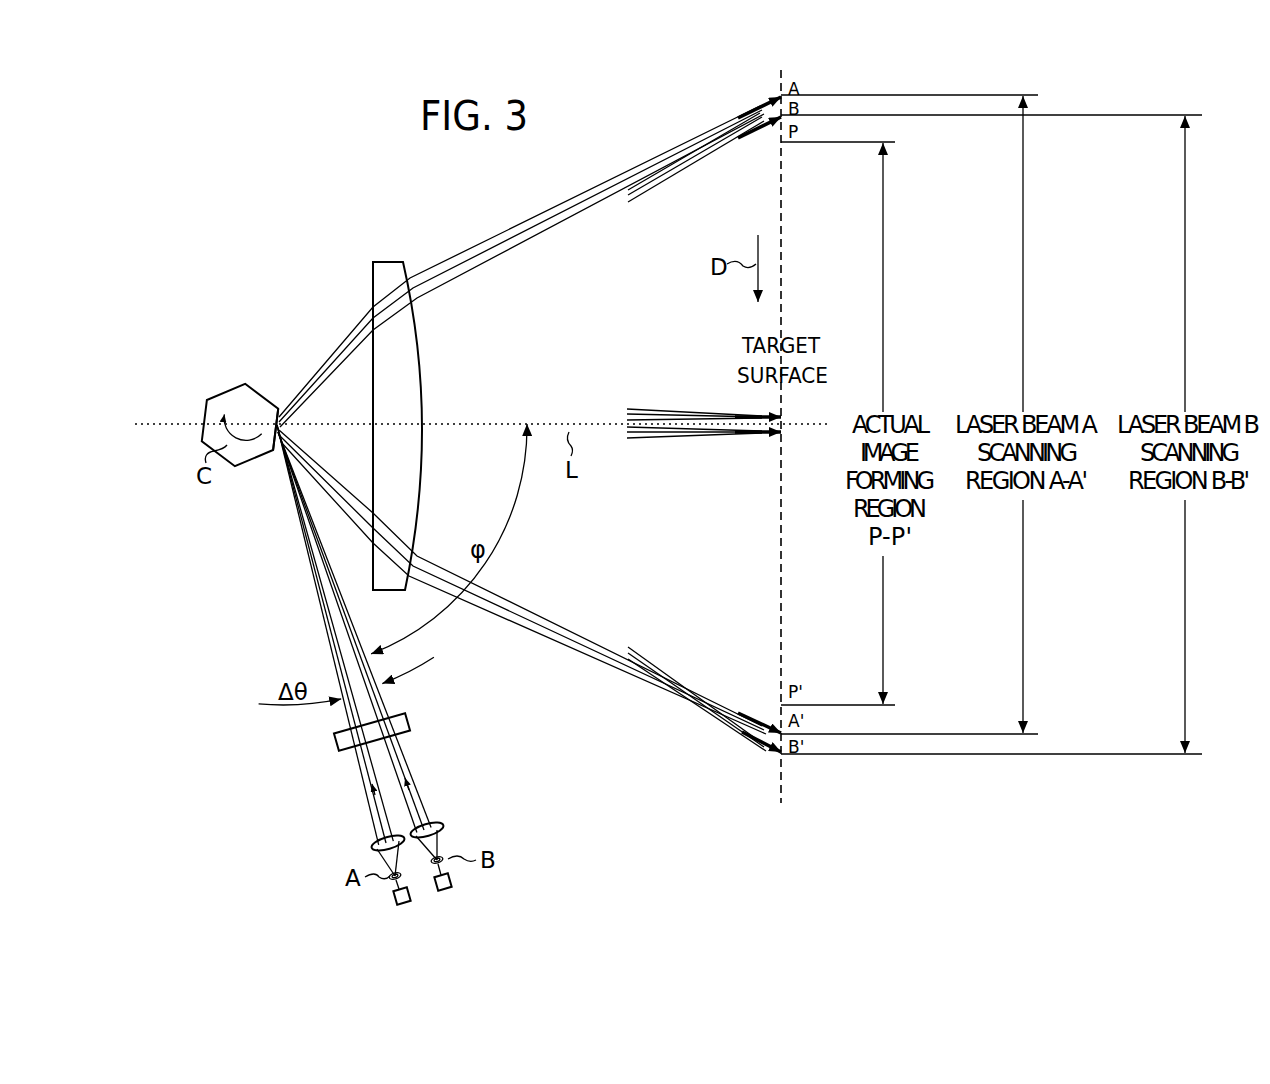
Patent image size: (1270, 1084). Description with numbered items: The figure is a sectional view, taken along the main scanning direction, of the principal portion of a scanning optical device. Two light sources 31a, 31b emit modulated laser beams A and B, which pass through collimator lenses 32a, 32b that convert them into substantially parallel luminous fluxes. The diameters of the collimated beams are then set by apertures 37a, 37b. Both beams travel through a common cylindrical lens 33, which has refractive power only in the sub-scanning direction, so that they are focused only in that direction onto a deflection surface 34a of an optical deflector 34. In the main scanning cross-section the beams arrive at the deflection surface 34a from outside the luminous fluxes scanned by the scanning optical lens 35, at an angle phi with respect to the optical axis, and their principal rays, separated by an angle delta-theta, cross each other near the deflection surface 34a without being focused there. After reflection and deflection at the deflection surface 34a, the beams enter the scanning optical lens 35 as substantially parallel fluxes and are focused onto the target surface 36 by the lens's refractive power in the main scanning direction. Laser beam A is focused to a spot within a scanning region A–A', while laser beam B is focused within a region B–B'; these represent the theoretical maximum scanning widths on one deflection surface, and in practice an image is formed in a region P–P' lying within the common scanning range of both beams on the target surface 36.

The light source 31a is at (393, 901).
The light source 31b is at (452, 887).
The collimator lens 32a is at (373, 845).
The collimator lens 32b is at (445, 830).
The cylindrical lens 33 is at (410, 720).
The optical deflector 34 is at (216, 394).
The deflection surface 34a is at (273, 399).
The scanning optical lens 35 is at (390, 262).
The target surface 36 is at (781, 306).
The aperture 37a is at (407, 790).
The aperture 37b is at (415, 783).